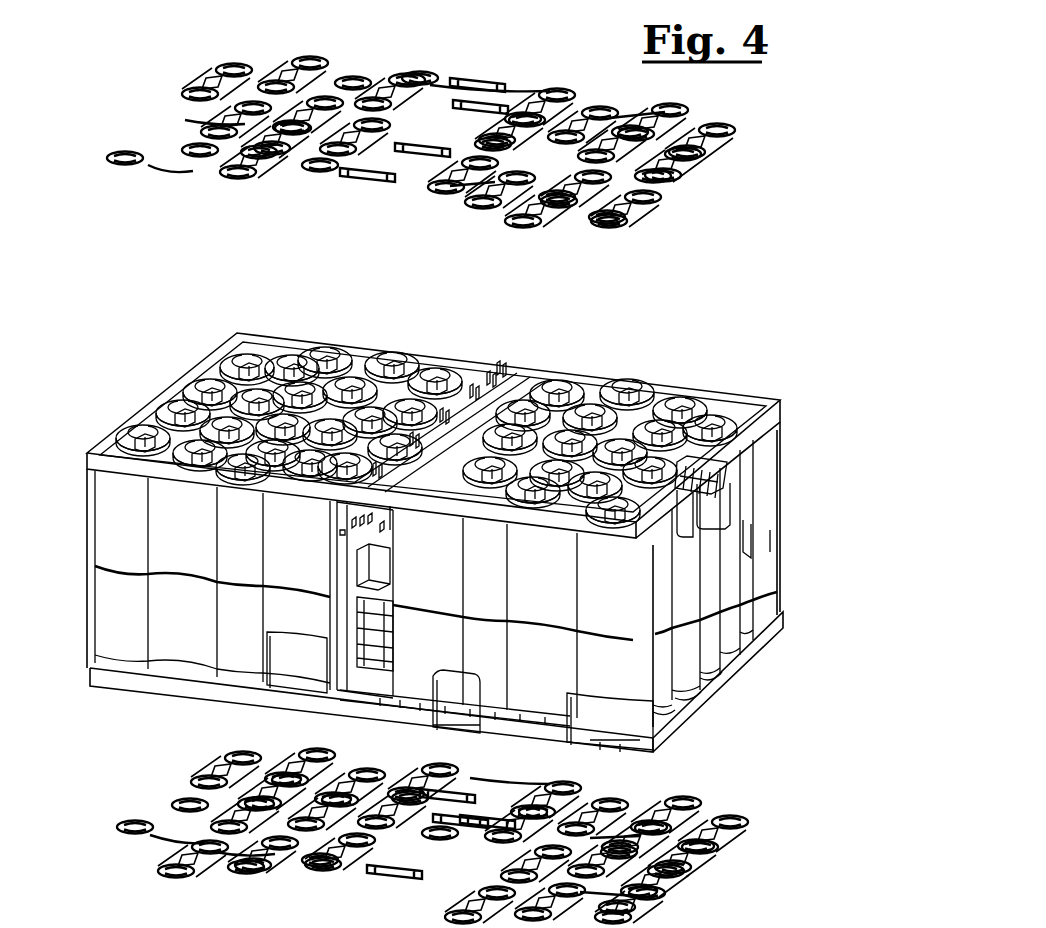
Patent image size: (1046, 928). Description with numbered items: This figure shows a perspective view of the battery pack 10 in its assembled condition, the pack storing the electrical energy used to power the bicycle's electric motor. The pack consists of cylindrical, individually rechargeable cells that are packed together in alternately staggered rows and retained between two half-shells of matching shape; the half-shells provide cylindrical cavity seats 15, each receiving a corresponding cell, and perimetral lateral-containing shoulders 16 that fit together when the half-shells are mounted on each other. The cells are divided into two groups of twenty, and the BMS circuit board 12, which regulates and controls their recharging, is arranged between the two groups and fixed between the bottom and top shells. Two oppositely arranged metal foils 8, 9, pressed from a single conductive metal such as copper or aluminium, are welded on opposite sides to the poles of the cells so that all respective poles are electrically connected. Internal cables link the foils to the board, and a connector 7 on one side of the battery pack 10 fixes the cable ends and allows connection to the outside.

The battery pack 10 is at (133, 321).
The metal foil 9 is at (682, 167).
The metal foil 8 is at (722, 836).
The connector 7 is at (720, 480).
The cylindrical cavity seat 15 is at (722, 643).
The perimetral lateral-containing shoulder 16 is at (190, 638).
The circuit board 12 is at (357, 565).